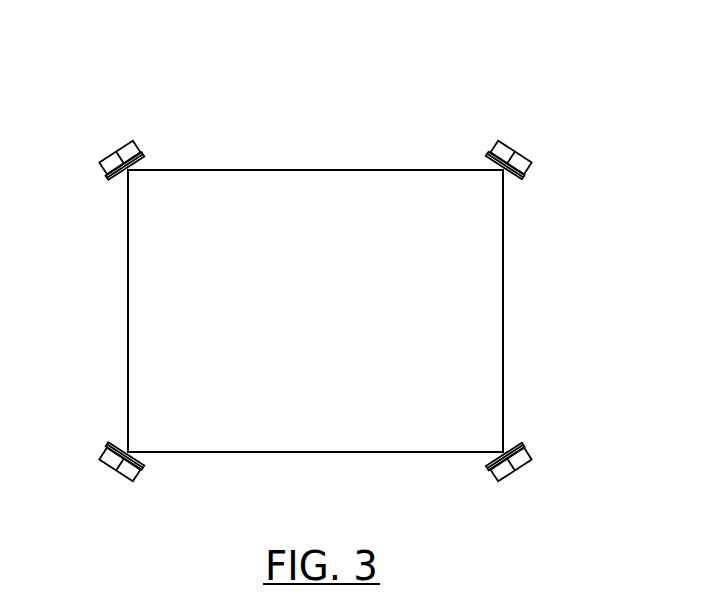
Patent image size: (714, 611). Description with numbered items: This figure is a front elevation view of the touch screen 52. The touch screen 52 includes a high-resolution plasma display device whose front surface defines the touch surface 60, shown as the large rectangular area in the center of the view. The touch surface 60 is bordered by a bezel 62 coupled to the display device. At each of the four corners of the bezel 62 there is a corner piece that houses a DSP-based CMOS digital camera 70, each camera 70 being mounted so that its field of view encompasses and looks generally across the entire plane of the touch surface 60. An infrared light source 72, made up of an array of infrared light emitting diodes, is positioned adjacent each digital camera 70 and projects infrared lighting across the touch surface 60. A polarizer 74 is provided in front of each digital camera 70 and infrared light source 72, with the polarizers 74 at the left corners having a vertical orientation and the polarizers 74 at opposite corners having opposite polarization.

The touch screen 52 is at (462, 130).
The touch surface 60 is at (268, 292).
The bezel 62 is at (345, 165).
The digital camera 70 is at (98, 172).
The infrared light source 72 is at (118, 145).
The polarizer 74 is at (143, 150).